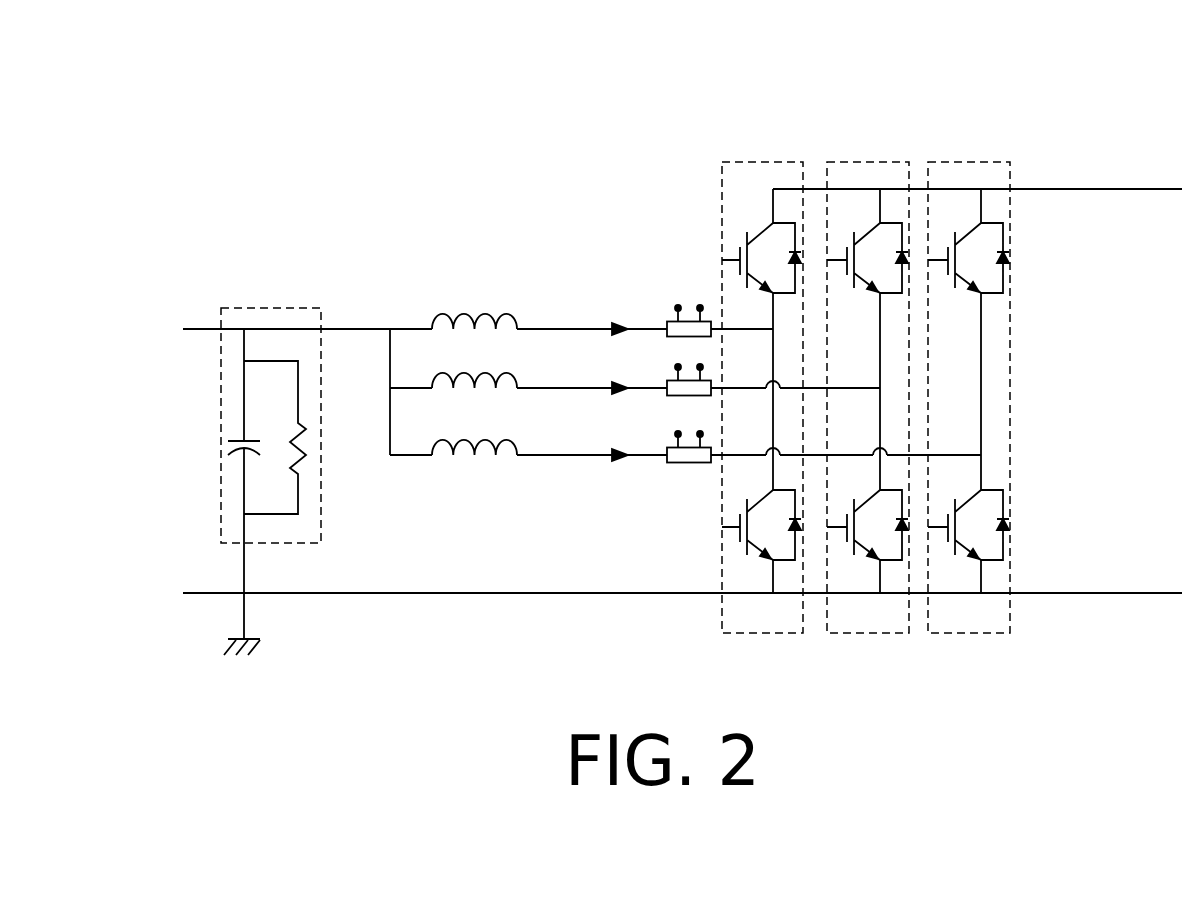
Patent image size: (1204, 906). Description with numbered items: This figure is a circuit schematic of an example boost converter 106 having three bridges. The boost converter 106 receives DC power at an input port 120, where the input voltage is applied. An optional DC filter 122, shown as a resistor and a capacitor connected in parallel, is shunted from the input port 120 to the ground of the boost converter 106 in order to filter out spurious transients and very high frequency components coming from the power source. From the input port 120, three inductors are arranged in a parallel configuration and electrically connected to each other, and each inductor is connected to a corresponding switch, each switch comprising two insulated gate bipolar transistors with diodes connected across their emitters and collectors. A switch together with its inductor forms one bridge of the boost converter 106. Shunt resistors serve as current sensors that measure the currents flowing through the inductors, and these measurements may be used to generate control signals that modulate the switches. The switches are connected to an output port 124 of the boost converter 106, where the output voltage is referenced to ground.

The boost converter 106 is at (1115, 66).
The input port 120 is at (390, 329).
The DC filter 122 is at (288, 306).
The output port 124 is at (1070, 189).